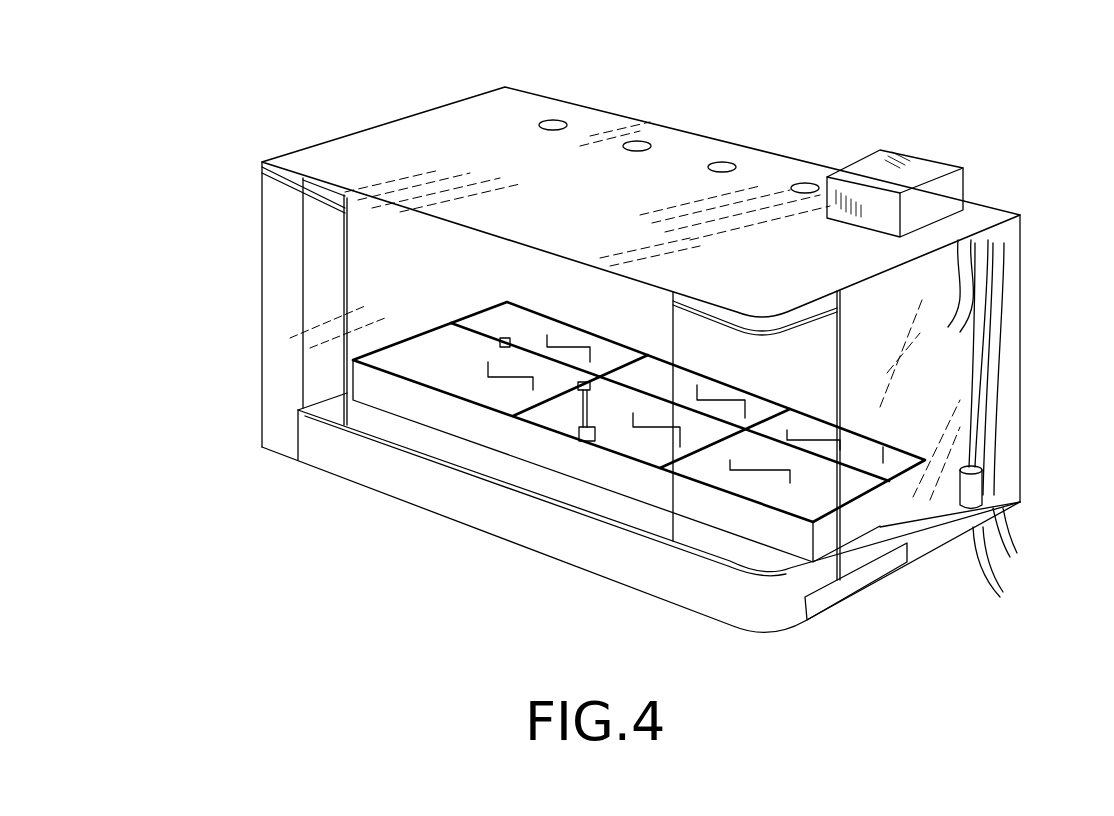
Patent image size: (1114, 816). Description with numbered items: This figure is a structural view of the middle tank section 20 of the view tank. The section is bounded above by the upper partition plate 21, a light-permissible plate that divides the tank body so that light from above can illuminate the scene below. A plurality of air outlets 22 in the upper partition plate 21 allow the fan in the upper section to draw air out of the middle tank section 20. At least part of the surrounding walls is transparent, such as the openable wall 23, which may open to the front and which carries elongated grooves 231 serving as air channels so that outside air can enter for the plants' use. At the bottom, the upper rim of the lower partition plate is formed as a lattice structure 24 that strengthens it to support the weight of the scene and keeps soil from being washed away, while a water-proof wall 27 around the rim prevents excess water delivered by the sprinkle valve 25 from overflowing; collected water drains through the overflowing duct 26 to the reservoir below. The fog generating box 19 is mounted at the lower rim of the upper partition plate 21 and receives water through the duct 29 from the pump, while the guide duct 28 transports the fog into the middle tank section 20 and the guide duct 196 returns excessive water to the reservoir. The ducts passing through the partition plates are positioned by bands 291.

The fog generating box 19 is at (905, 172).
The middle tank section 20 is at (242, 278).
The upper partition plate 21 is at (420, 128).
The air outlets 22 is at (722, 165).
The openable wall 23 is at (273, 330).
The lattice structure 24 is at (418, 362).
The sprinkle valve 25 is at (578, 386).
The overflowing duct 26 is at (512, 342).
The water-proof wall 27 is at (543, 541).
The guide duct 28 is at (950, 330).
The duct 29 is at (972, 432).
The elongated grooves 231 is at (262, 170).
The bands 291 is at (975, 495).
The guide duct 196 is at (1008, 534).